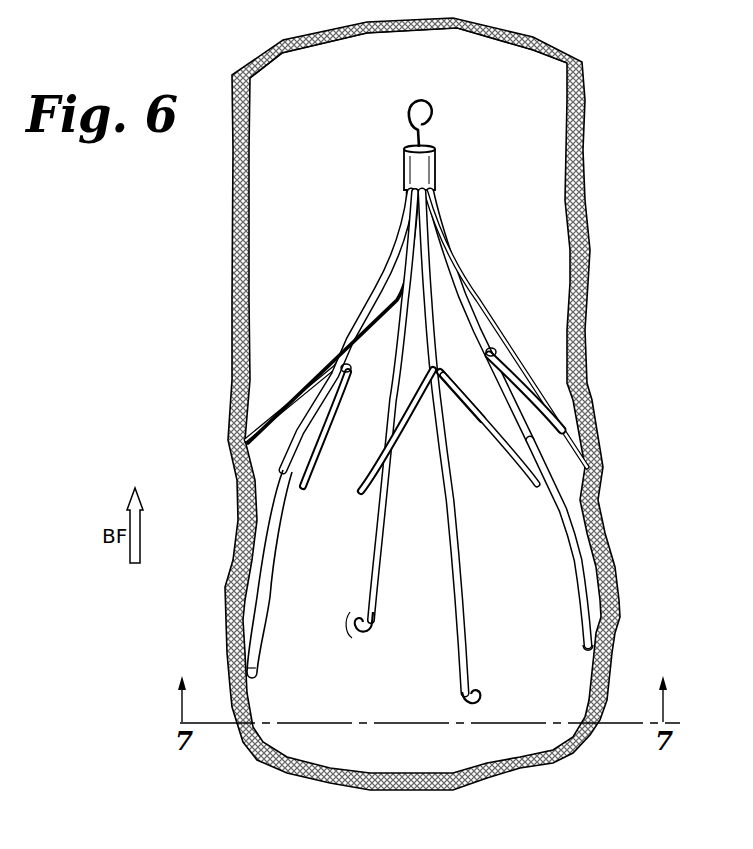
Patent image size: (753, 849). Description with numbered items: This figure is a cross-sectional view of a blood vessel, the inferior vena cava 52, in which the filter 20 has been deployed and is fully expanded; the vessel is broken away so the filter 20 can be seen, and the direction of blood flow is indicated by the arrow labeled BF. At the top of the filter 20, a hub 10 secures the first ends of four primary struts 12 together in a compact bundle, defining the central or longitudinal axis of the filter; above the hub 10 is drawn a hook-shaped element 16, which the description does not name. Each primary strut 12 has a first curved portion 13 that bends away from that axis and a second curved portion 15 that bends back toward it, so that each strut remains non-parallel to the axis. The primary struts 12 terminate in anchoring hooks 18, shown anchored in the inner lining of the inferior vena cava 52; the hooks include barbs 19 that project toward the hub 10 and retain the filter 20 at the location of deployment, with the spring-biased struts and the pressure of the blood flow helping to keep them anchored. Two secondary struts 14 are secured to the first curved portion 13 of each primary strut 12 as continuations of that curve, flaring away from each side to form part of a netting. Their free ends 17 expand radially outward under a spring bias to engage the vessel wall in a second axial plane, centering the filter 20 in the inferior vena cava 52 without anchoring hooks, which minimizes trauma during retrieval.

The hub 10 is at (436, 172).
The primary struts 12 is at (378, 297).
The first curved portion 13 is at (343, 362).
The secondary struts 14 is at (300, 450).
The second curved portion 15 is at (267, 540).
The retrieval hook 16 is at (406, 116).
The free ends 17 is at (243, 450).
The anchoring hooks 18 is at (369, 630).
The barbs 19 is at (238, 666).
The filter 20 is at (530, 218).
The inferior vena cava 52 is at (231, 258).